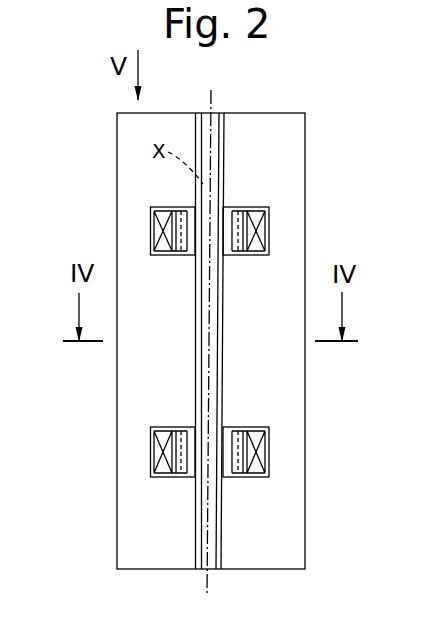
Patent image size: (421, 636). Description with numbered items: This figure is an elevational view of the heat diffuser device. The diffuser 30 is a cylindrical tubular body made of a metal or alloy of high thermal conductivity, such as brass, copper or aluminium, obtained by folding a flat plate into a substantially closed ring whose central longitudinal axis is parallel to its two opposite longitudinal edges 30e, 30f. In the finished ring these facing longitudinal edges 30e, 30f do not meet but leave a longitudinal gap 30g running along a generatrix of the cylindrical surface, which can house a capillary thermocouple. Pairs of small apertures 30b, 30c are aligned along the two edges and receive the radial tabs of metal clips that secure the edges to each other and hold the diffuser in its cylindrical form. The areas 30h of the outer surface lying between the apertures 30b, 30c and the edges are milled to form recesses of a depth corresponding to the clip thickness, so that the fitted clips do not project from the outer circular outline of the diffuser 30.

The diffuser 30 is at (305, 567).
The aperture 30b is at (150, 436).
The aperture 30c is at (259, 450).
The longitudinal edge 30e is at (196, 515).
The longitudinal edge 30f is at (219, 528).
The longitudinal gap 30g is at (203, 556).
The recess area 30h is at (187, 462).